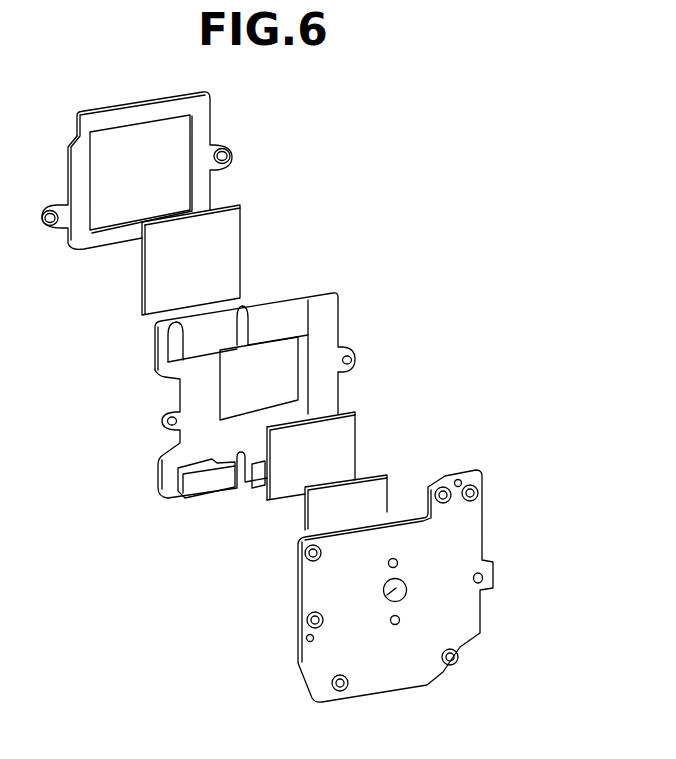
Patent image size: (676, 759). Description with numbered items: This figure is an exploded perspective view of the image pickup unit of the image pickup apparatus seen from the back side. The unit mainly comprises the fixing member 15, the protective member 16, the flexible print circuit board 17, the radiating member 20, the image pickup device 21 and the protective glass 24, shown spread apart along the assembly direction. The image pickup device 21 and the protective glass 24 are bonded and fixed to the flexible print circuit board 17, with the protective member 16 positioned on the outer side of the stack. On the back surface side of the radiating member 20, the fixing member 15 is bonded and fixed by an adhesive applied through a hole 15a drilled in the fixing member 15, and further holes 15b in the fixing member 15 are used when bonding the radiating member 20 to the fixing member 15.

The protective member 16 is at (203, 128).
The protective glass 24 is at (222, 247).
The flexible print circuit board 17 is at (333, 327).
The image pickup device 21 is at (327, 448).
The radiating member 20 is at (372, 500).
The fixing member 15 is at (458, 535).
The hole 15a is at (388, 594).
The holes 15b is at (398, 565).